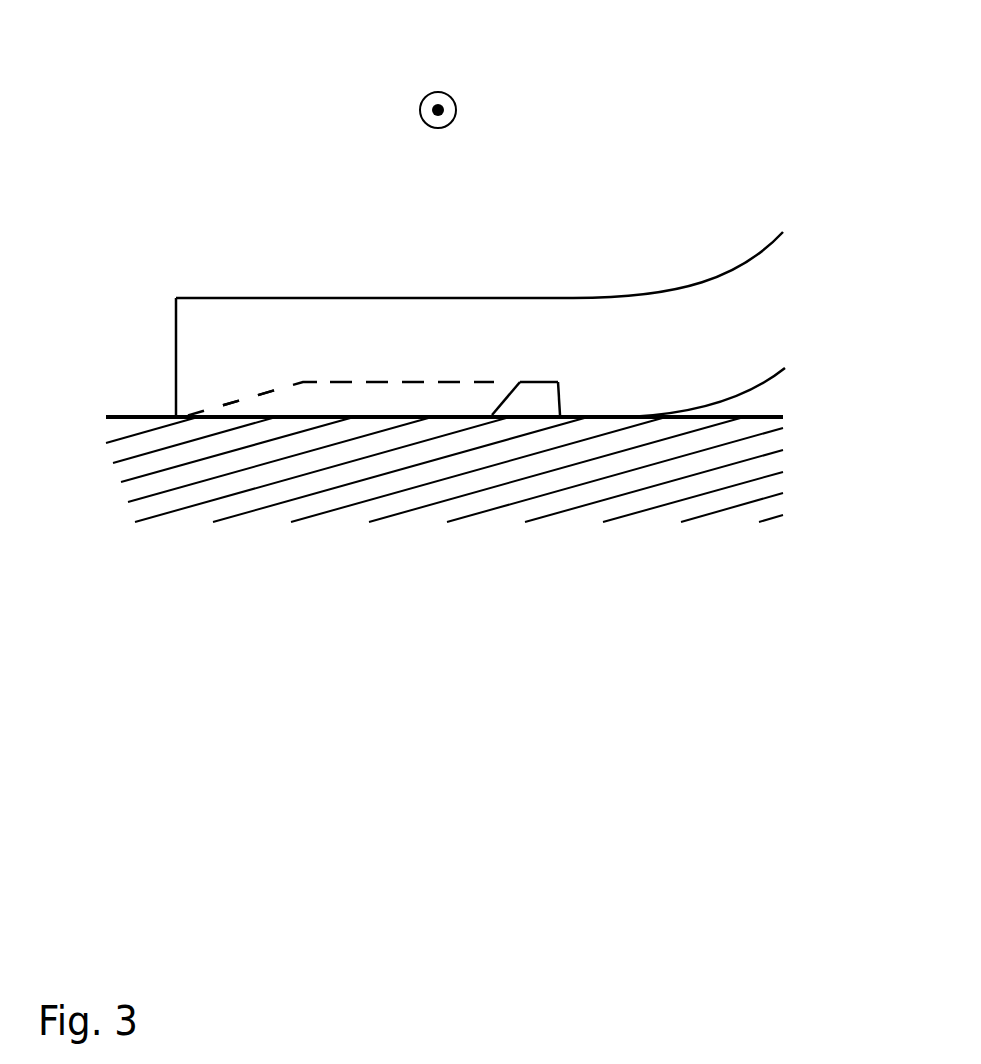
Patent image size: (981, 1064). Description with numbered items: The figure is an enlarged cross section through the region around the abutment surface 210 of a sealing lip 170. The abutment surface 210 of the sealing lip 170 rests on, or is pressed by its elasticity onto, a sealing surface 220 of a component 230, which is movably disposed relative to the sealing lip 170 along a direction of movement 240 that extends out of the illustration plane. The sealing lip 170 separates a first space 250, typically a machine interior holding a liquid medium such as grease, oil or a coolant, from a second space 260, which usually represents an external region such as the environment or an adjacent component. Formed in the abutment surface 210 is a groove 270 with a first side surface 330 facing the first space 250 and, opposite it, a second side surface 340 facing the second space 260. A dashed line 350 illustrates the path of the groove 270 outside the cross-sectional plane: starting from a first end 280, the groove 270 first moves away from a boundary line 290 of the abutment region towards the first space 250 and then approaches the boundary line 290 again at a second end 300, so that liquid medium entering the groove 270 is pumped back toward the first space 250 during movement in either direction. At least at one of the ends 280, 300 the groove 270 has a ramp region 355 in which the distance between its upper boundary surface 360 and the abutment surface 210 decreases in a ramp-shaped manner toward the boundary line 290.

The sealing lip 170 is at (685, 310).
The abutment surface 210 is at (292, 417).
The sealing surface 220 is at (738, 417).
The component 230 is at (402, 475).
The direction of movement 240 is at (442, 90).
The first space 250 is at (252, 175).
The second space 260 is at (768, 383).
The groove 270 is at (535, 403).
The first end 280 is at (242, 408).
The boundary line 290 is at (177, 417).
The second end 300 is at (230, 514).
The first side surface 330 is at (510, 393).
The second side surface 340 is at (560, 393).
The dashed line 350 is at (407, 380).
The ramp region 355 is at (303, 382).
The upper boundary surface 360 is at (543, 382).